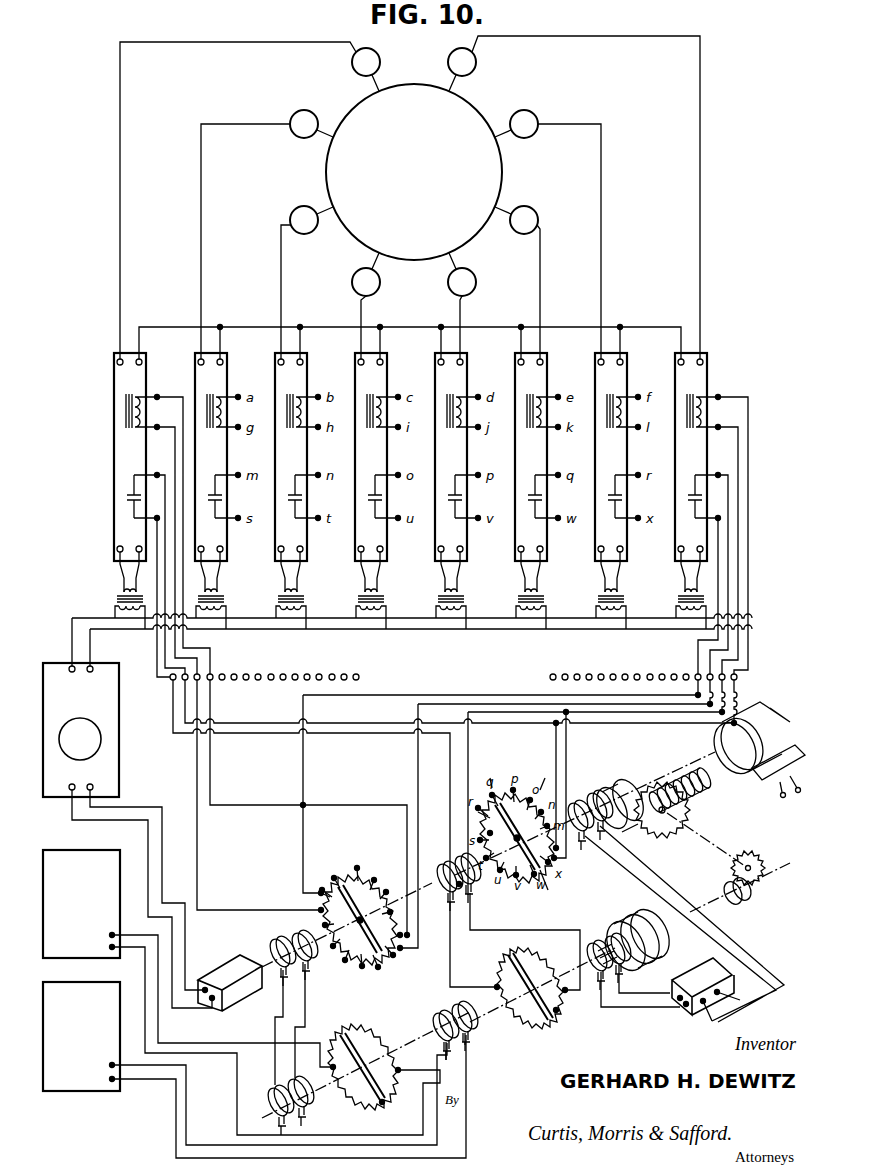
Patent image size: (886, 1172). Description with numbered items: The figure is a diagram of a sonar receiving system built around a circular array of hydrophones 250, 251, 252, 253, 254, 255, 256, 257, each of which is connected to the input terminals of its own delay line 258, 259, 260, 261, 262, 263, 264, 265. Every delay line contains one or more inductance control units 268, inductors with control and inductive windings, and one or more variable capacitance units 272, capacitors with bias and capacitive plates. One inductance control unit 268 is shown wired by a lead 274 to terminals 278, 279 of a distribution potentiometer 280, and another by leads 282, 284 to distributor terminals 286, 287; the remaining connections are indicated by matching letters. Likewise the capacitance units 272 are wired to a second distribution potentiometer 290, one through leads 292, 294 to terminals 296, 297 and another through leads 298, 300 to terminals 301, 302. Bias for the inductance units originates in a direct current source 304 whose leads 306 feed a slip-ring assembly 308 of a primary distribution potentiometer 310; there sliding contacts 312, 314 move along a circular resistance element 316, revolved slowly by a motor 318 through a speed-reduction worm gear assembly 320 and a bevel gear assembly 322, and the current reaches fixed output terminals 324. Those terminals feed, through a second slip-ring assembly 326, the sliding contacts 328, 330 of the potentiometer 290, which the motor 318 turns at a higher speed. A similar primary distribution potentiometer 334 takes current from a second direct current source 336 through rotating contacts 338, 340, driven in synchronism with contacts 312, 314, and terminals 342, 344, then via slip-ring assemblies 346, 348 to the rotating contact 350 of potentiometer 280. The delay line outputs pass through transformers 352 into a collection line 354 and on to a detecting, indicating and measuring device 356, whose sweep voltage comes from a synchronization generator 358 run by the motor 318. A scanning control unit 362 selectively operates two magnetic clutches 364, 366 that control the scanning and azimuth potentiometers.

The hydrophone 250 is at (352, 62).
The hydrophone 251 is at (297, 113).
The hydrophone 252 is at (302, 207).
The hydrophone 253 is at (352, 278).
The hydrophone 254 is at (476, 280).
The hydrophone 255 is at (532, 207).
The hydrophone 256 is at (536, 115).
The hydrophone 257 is at (476, 62).
The delay line 258 is at (112, 370).
The delay line 259 is at (193, 372).
The delay line 260 is at (273, 372).
The delay line 261 is at (353, 372).
The delay line 262 is at (433, 372).
The delay line 263 is at (513, 372).
The delay line 264 is at (593, 372).
The delay line 265 is at (673, 372).
The inductance control unit 268 is at (126, 408).
The variable capacitance unit 272 is at (131, 496).
The lead 274 is at (246, 814).
The terminal 278 is at (316, 913).
The terminal 279 is at (404, 938).
The distribution potentiometer 280 is at (334, 960).
The lead 282 is at (305, 769).
The lead 284 is at (418, 778).
The distributor terminal 286 is at (316, 895).
The distributor terminal 287 is at (404, 950).
The distribution potentiometer 290 is at (516, 776).
The lead 292 is at (450, 760).
The lead 294 is at (565, 770).
The terminal 296 is at (470, 848).
The terminal 297 is at (558, 850).
The lead 298 is at (462, 770).
The lead 300 is at (565, 748).
The terminal 301 is at (466, 822).
The terminal 302 is at (556, 862).
The direct current source 304 is at (68, 985).
The leads 306 is at (176, 1112).
The slip-ring assembly 308 is at (442, 1012).
The primary distribution potentiometer 310 is at (538, 1046).
The sliding contact 312 is at (514, 960).
The sliding contact 314 is at (558, 1014).
The circular resistance element 316 is at (566, 998).
The motor 318 is at (768, 734).
The worm gear assembly 320 is at (650, 768).
The bevel gear assembly 322 is at (734, 862).
The fixed output terminals 324 is at (494, 992).
The slip-ring assembly 326 is at (436, 878).
The sliding contact 328 is at (490, 834).
The sliding contact 330 is at (560, 886).
The primary distribution potentiometer 334 is at (348, 1120).
The direct current source 336 is at (70, 852).
The rotating contact 338 is at (342, 1038).
The rotating contact 340 is at (386, 1105).
The terminal 342 is at (330, 1064).
The terminal 344 is at (402, 1070).
The slip-ring assembly 346 is at (268, 1086).
The slip-ring assembly 348 is at (268, 940).
The rotatably-mounted contact 350 is at (350, 866).
The transformer 352 is at (116, 599).
The collection line 354 is at (398, 632).
The detecting, indicating and measuring device 356 is at (119, 712).
The synchronization generator 358 is at (216, 974).
The scanning control unit 362 is at (696, 1018).
The magnetic clutch 364 is at (640, 830).
The magnetic clutch 366 is at (620, 928).